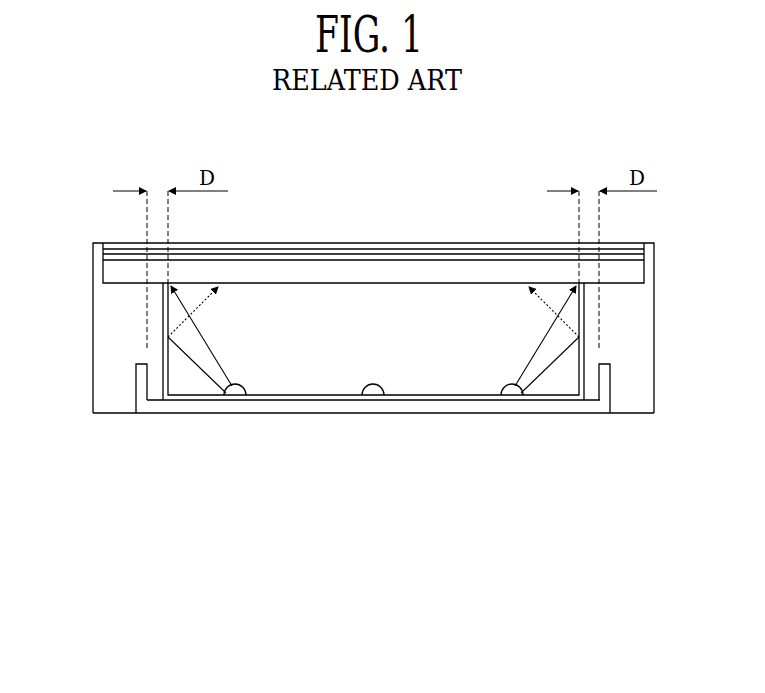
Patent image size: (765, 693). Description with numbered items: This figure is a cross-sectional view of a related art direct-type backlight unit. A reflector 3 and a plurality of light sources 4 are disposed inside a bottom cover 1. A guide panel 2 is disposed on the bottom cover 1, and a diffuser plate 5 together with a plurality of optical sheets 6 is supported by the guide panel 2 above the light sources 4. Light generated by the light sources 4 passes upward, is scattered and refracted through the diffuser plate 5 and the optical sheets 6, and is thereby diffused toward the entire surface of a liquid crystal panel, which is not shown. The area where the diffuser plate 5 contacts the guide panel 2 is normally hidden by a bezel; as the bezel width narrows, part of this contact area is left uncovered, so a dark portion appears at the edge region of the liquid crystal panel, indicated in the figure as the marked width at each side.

The bottom cover 1 is at (270, 413).
The guide panel 2 is at (100, 342).
The reflector 3 is at (430, 400).
The light sources 4 is at (373, 397).
The diffuser plate 5 is at (360, 270).
The optical sheets 6 is at (295, 243).